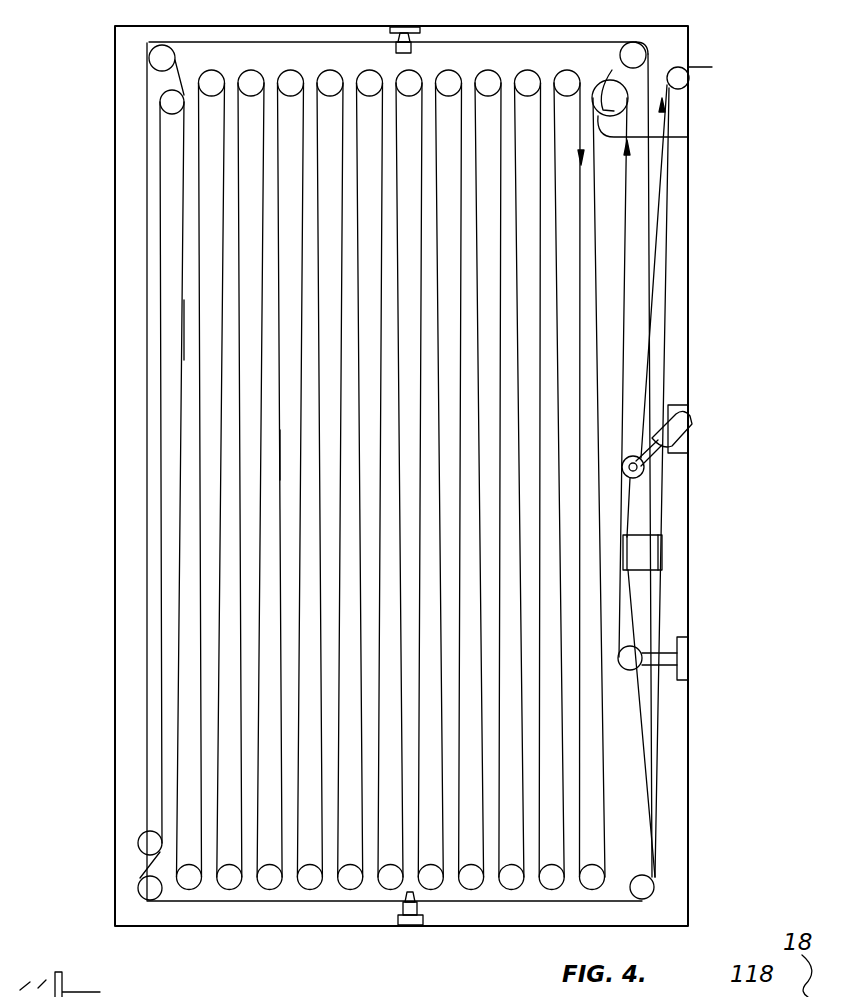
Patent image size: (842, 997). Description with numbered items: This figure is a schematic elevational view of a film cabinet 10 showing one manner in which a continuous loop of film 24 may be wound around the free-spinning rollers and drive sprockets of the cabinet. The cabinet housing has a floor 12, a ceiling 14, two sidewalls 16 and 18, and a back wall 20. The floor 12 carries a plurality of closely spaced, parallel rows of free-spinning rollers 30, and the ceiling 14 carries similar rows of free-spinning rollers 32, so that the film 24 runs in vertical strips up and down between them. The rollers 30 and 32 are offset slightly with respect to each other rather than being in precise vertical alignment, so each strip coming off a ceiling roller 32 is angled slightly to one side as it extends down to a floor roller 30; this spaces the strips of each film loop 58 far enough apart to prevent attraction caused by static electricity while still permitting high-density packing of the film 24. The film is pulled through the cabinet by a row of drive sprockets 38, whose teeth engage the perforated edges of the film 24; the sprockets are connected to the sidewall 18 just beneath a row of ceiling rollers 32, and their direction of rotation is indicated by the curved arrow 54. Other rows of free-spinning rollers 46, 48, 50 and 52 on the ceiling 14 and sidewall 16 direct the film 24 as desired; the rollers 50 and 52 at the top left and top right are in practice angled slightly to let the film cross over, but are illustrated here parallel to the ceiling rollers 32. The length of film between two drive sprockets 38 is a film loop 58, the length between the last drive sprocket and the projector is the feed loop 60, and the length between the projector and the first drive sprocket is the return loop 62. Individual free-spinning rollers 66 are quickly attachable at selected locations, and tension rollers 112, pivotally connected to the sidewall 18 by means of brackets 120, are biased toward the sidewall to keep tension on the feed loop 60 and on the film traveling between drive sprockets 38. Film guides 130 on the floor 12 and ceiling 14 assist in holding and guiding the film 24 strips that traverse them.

The film cabinet 10 is at (80, 545).
The floor 12 is at (450, 927).
The ceiling 14 is at (658, 24).
The sidewall 16 is at (115, 612).
The sidewall 18 is at (688, 240).
The back wall 20 is at (440, 71).
The film 24 is at (147, 262).
The free-spinning rollers 30 is at (267, 884).
The free-spinning rollers 32 is at (213, 80).
The drive sprockets 38 is at (688, 137).
The free-spinning rollers 46 is at (138, 842).
The free-spinning rollers 48 is at (165, 106).
The free-spinning rollers 50 is at (148, 60).
The free-spinning rollers 52 is at (688, 40).
The curved arrow 54 is at (603, 81).
The film loop 58 is at (183, 333).
The feed loop 60 is at (738, 70).
The return loop 62 is at (730, 670).
The free-spinning roller 66 is at (690, 87).
The tension roller 112 is at (645, 474).
The brackets 120 is at (677, 405).
The film guides 130 is at (388, 31).